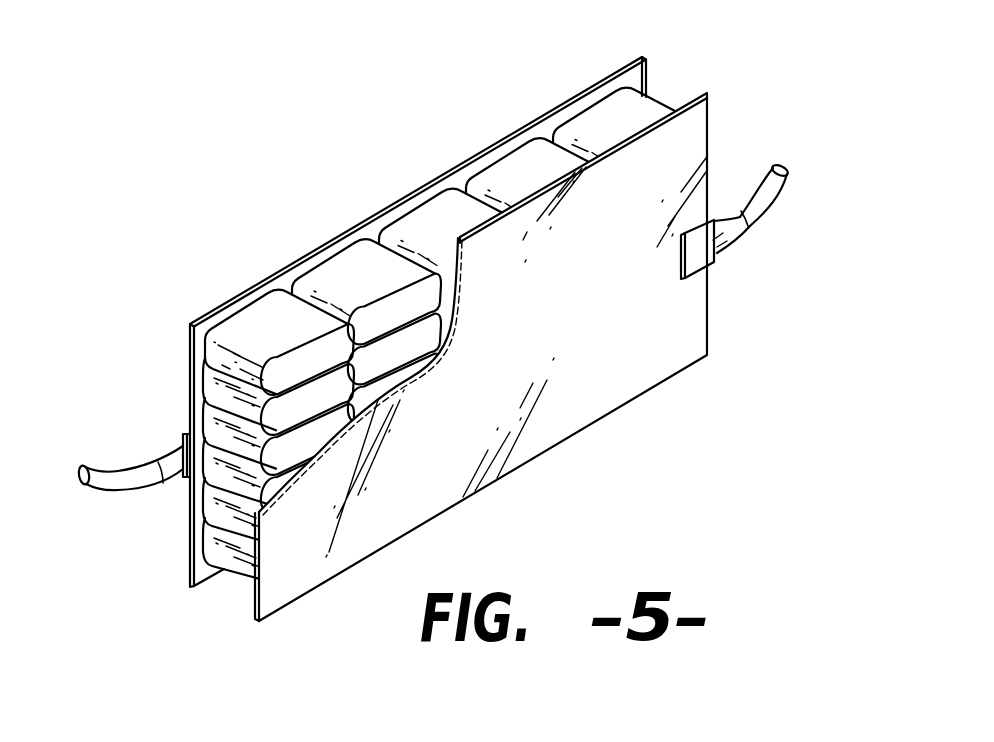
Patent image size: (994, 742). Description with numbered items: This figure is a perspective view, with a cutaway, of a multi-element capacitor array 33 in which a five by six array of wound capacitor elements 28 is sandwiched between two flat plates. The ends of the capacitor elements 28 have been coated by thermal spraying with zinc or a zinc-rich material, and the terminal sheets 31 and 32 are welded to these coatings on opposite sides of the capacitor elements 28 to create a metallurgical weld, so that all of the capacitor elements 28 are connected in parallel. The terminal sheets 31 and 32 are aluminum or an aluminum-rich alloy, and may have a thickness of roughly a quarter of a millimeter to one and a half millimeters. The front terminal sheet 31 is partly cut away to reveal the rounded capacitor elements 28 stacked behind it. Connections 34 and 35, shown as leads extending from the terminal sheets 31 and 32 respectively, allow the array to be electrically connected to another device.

The capacitor elements 28 is at (597, 117).
The terminal sheet 31 is at (710, 133).
The terminal sheet 32 is at (457, 165).
The multi-element capacitor array 33 is at (238, 204).
The connection 34 is at (773, 210).
The connection 35 is at (124, 495).